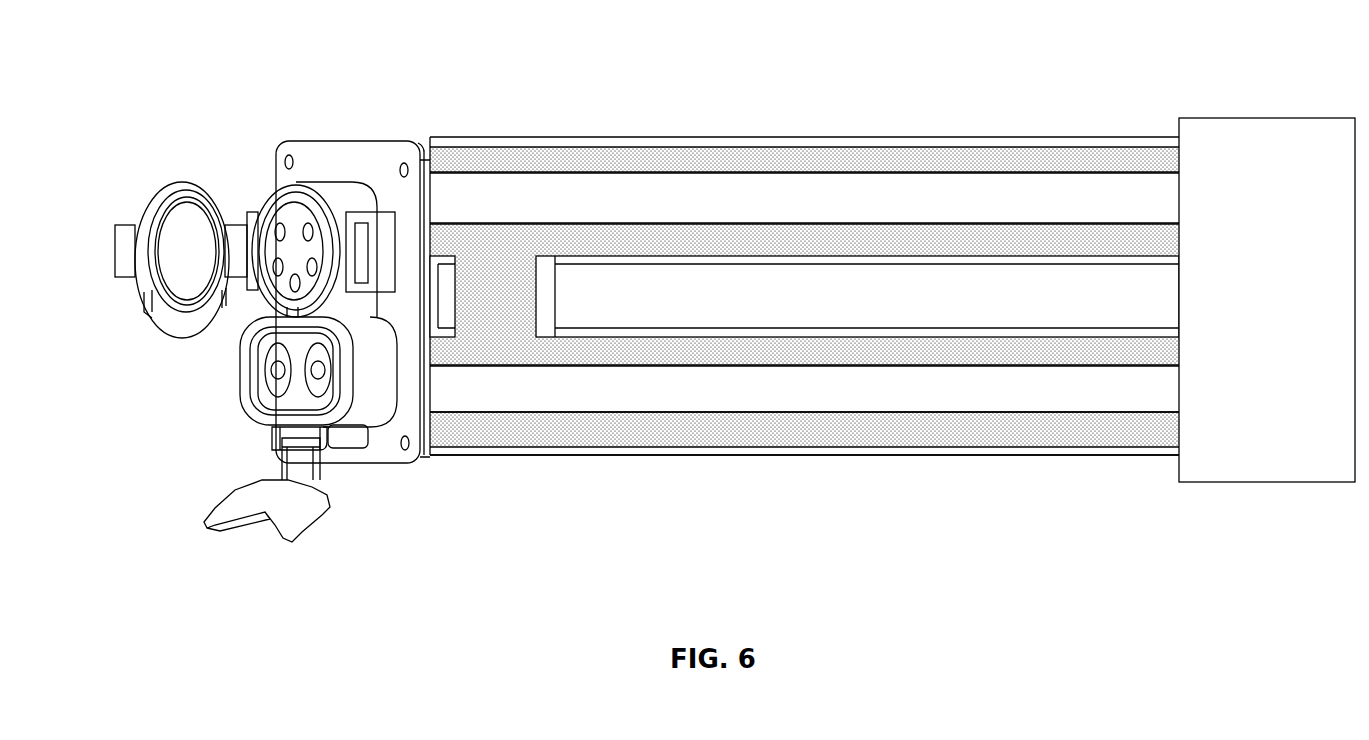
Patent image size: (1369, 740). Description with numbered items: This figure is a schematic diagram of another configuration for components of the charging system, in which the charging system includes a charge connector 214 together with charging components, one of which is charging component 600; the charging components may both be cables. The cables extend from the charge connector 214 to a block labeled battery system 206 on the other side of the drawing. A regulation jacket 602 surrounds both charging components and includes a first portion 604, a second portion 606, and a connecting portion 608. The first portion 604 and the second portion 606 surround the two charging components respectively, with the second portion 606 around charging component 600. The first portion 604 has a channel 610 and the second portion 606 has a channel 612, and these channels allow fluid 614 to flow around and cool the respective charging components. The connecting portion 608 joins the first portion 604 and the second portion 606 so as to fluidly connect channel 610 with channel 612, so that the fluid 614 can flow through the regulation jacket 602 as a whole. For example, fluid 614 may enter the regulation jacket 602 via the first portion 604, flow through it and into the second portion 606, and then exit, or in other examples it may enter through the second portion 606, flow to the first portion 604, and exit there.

The charge connector 214 is at (358, 135).
The battery system 206 is at (1268, 117).
The charging component 600 is at (982, 204).
The regulation jacket 602 is at (614, 133).
The first portion 604 is at (810, 141).
The second portion 606 is at (949, 461).
The connecting portion 608 is at (540, 308).
The channel 610 is at (701, 149).
The channel 612 is at (841, 444).
The fluid 614 is at (532, 434).